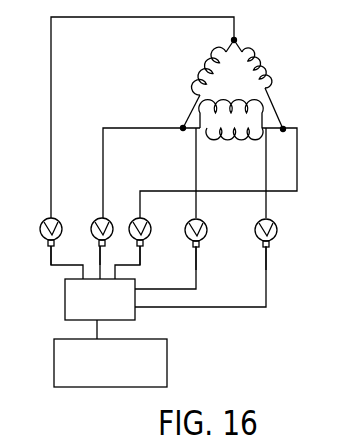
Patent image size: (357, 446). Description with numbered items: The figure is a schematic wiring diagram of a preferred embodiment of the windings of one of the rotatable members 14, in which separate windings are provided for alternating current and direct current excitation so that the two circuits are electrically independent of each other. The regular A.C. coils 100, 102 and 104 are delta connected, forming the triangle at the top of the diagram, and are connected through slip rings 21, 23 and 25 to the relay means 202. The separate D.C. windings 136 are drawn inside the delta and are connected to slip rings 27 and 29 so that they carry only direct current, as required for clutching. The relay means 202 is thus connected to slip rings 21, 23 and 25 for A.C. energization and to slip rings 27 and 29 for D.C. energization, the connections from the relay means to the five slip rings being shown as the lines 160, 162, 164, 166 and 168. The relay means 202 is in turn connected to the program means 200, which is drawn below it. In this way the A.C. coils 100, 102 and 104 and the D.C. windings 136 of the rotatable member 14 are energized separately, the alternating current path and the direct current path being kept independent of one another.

The rotatable member 14 is at (192, 97).
The A.C. coil 102 is at (210, 56).
The A.C. coil 104 is at (258, 62).
The D.C. windings 136 is at (250, 101).
The A.C. coil 100 is at (243, 139).
The slip ring 21 is at (42, 226).
The slip ring 23 is at (93, 226).
The slip ring 25 is at (132, 226).
The slip ring 27 is at (188, 229).
The slip ring 29 is at (257, 229).
The control line 160 is at (48, 247).
The control line 162 is at (100, 247).
The control line 164 is at (141, 248).
The control line 166 is at (197, 266).
The control line 168 is at (267, 266).
The relay means 202 is at (65, 297).
The program means 200 is at (54, 355).